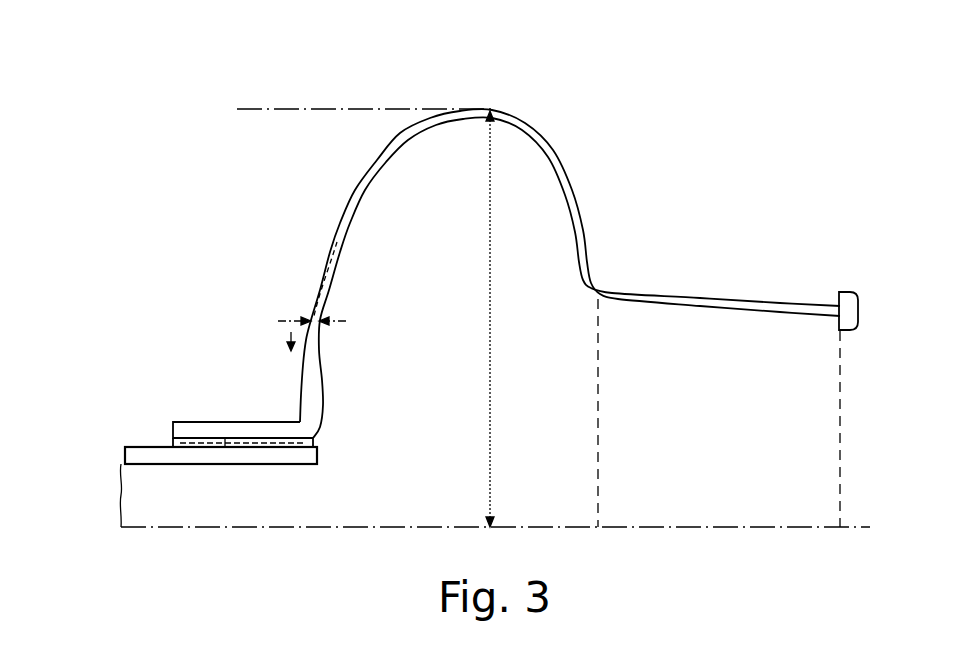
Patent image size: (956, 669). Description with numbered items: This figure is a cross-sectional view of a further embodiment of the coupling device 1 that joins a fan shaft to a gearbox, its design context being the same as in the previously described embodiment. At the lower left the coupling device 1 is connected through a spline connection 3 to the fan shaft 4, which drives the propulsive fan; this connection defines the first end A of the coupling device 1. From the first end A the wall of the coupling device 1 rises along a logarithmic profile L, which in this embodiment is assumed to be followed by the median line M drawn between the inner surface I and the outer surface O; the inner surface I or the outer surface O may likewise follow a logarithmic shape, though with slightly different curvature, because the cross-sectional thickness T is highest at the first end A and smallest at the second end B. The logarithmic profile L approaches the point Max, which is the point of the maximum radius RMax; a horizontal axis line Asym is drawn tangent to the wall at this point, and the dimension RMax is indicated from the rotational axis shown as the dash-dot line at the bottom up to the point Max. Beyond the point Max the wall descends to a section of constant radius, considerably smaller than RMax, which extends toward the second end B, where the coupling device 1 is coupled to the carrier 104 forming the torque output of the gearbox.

The coupling device 1 is at (595, 191).
The spline connection 3 is at (174, 440).
The fan shaft 4 is at (130, 455).
The carrier 104 is at (843, 294).
The median line M is at (265, 528).
The axis of symmetry Asym is at (258, 109).
The point Max is at (493, 108).
The maximum radius RMax is at (515, 319).
The second end B is at (851, 429).
The cross-sectional thickness T is at (322, 330).
The outer surface O is at (357, 192).
The inner surface I is at (375, 187).
The logarithmic profile L is at (335, 252).
The first end A is at (310, 414).